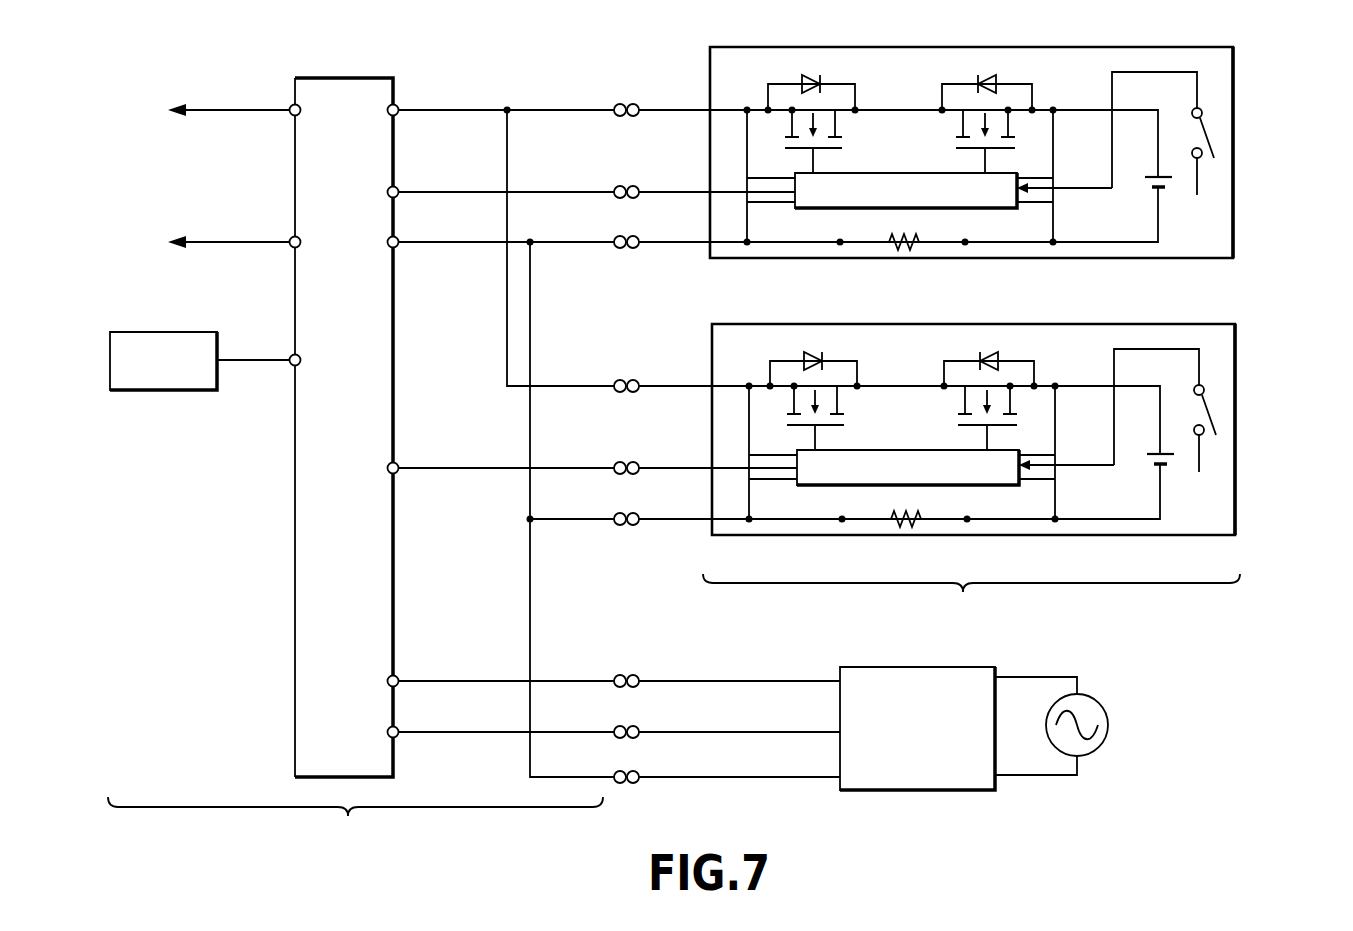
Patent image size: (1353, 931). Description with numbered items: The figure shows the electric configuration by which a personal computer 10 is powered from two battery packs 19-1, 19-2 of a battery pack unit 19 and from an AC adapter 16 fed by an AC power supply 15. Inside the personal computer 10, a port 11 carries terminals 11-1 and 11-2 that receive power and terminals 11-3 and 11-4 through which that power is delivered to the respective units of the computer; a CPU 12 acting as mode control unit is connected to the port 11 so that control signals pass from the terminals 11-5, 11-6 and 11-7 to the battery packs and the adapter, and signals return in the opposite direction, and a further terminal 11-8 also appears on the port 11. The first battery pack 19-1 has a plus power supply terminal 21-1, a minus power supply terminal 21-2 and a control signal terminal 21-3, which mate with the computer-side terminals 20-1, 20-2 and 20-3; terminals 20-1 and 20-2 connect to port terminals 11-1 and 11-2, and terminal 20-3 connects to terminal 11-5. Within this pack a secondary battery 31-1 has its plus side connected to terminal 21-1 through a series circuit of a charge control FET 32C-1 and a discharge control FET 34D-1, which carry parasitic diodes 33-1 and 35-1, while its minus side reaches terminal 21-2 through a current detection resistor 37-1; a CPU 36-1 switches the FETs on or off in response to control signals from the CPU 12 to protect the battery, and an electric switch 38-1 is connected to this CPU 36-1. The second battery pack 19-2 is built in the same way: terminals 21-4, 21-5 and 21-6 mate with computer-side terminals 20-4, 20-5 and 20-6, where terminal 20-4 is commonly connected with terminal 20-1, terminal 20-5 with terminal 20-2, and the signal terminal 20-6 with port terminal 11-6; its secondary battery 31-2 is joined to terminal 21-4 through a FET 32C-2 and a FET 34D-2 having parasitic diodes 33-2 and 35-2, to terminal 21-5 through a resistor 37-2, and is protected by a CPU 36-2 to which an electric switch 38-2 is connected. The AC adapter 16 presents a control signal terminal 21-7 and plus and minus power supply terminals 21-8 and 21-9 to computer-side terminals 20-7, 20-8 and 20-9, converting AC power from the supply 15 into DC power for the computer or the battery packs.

The personal computer 10 is at (355, 824).
The port 11 is at (294, 560).
The CPU 12 is at (147, 331).
The terminal 11-1 is at (397, 105).
The terminal 11-2 is at (397, 238).
The terminal 11-3 is at (291, 106).
The terminal 11-4 is at (291, 238).
The terminal 11-5 is at (397, 187).
The terminal 11-6 is at (397, 463).
The terminal 11-7 is at (397, 727).
The port terminal 11-8 is at (397, 676).
The terminal 20-1 is at (616, 105).
The terminal 20-2 is at (616, 237).
The terminal 20-3 is at (616, 187).
The power supply terminal 20-4 is at (616, 381).
The terminal 20-5 is at (616, 514).
The signal input/output terminal 20-6 is at (616, 463).
The terminal 20-7 is at (616, 727).
The terminal 20-8 is at (616, 676).
The terminal 20-9 is at (616, 772).
The power supply terminal 21-1 is at (637, 105).
The power supply terminal 21-2 is at (637, 237).
The terminal 21-3 is at (637, 187).
The terminal 21-4 is at (637, 381).
The terminal 21-5 is at (637, 514).
The terminal 21-6 is at (637, 463).
The terminal 21-7 is at (637, 727).
The power supply terminal 21-8 is at (637, 676).
The power supply terminal 21-9 is at (637, 772).
The battery pack unit 19 is at (971, 601).
The battery pack 19-1 is at (1233, 82).
The battery pack 19-2 is at (1235, 359).
The secondary battery 31-1 is at (1175, 184).
The secondary battery 31-2 is at (1177, 461).
The FET 32C-1 is at (958, 146).
The FET 32C-2 is at (960, 423).
The parasitic diode 33-1 is at (993, 84).
The parasitic diode 33-2 is at (995, 361).
The FET 34D-1 is at (840, 147).
The FET 34D-2 is at (842, 424).
The parasitic diode 35-1 is at (823, 84).
The parasitic diode 35-2 is at (825, 361).
The CPU 36-1 is at (990, 208).
The CPU 36-2 is at (992, 485).
The resistor 37-1 is at (889, 248).
The resistor 37-2 is at (891, 525).
The electric switch 38-1 is at (1213, 130).
The electric switch 38-2 is at (1215, 407).
The AC power supply 15 is at (1100, 700).
The AC adapter 16 is at (945, 790).